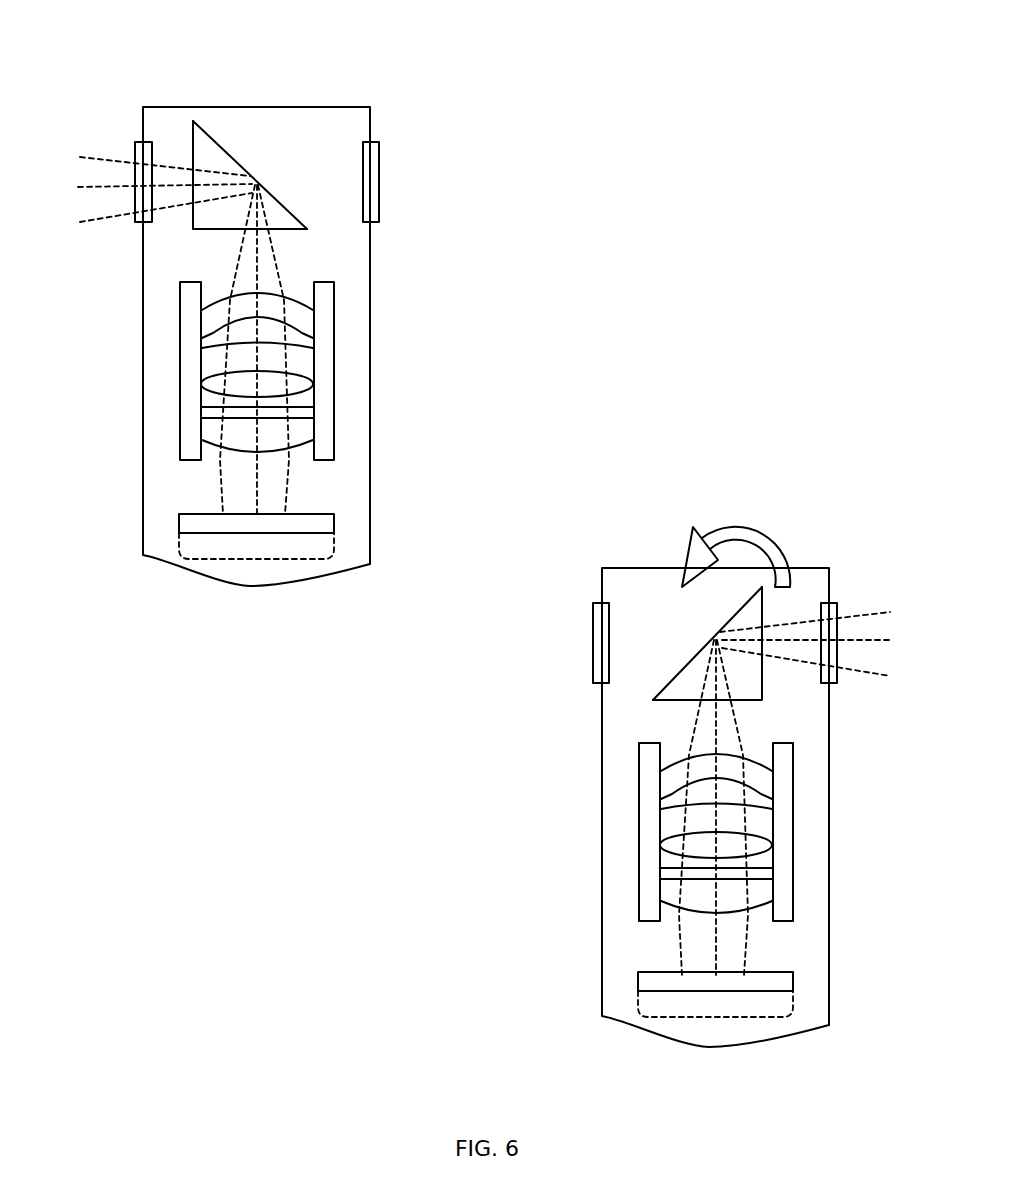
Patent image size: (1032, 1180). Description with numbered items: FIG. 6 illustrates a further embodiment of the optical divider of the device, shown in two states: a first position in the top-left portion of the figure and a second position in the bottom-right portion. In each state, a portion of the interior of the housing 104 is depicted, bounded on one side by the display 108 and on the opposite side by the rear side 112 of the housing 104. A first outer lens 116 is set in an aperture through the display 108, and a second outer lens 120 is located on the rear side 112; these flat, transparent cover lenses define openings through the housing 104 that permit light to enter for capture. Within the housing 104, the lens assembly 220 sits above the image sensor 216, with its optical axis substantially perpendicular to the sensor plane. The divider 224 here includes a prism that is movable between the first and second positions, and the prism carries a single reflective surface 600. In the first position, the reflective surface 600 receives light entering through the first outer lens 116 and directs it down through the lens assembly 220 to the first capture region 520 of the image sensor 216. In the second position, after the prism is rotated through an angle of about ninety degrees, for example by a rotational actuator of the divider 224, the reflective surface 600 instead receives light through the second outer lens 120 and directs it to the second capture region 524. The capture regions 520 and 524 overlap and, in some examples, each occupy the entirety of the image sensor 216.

The housing 104 is at (173, 106).
The display 108 is at (141, 509).
The rear side 112 is at (373, 401).
The first outer lens 116 is at (133, 150).
The second outer lens 120 is at (380, 187).
The image sensor 216 is at (334, 514).
The lens assembly 220 is at (163, 368).
The divider 224 is at (224, 122).
The reflective surface 600 is at (284, 200).
The first capture region 520 is at (256, 561).
The second capture region 524 is at (715, 1053).